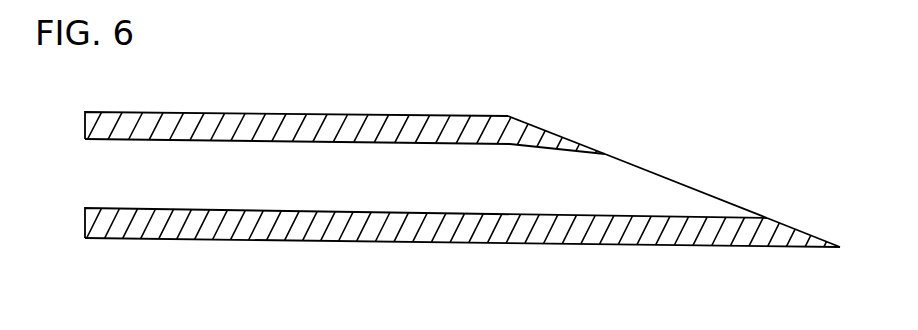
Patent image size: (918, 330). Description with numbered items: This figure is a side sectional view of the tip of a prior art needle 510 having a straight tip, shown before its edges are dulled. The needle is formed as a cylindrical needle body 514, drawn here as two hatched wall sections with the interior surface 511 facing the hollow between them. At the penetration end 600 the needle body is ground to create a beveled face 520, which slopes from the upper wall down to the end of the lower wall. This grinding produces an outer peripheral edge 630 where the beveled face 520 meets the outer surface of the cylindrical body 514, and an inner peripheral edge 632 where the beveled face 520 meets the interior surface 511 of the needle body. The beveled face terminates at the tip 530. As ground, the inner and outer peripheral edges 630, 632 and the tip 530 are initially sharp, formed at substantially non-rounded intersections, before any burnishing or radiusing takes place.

The needle 510 is at (291, 106).
The interior surface 511 is at (175, 140).
The needle body 514 is at (323, 241).
The beveled face 520 is at (657, 172).
The tip 530 is at (840, 247).
The penetration end 600 is at (667, 247).
The outer peripheral edge 630 is at (509, 116).
The inner peripheral edge 632 is at (605, 153).